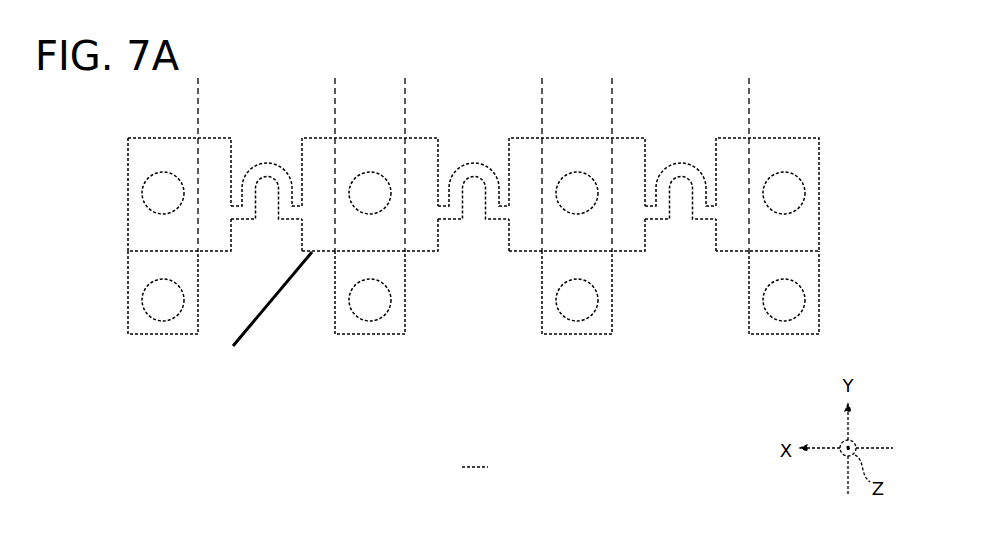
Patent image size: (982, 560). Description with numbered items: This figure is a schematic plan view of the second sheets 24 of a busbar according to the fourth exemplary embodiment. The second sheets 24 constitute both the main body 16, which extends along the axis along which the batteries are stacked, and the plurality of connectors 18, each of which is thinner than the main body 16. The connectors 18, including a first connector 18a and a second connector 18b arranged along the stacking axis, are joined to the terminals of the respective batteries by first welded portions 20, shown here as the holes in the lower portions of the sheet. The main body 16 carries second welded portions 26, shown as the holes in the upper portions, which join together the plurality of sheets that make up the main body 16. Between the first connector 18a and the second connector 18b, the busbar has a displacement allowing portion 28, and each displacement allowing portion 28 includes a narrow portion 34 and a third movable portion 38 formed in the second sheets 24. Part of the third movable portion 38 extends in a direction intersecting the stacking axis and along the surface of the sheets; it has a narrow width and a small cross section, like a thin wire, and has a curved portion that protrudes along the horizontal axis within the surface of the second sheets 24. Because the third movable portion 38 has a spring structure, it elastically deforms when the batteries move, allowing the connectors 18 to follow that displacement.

The main body 16 is at (820, 160).
The connectors 18 is at (820, 278).
The first connector 18a is at (136, 268).
The second connector 18b is at (345, 268).
The first welded portions 20 is at (784, 322).
The second sheets 24 is at (509, 302).
The second welded portions 26 is at (783, 172).
The displacement allowing portion 28 is at (202, 97).
The narrow portion 34 is at (257, 316).
The third movable portion 38 is at (273, 193).